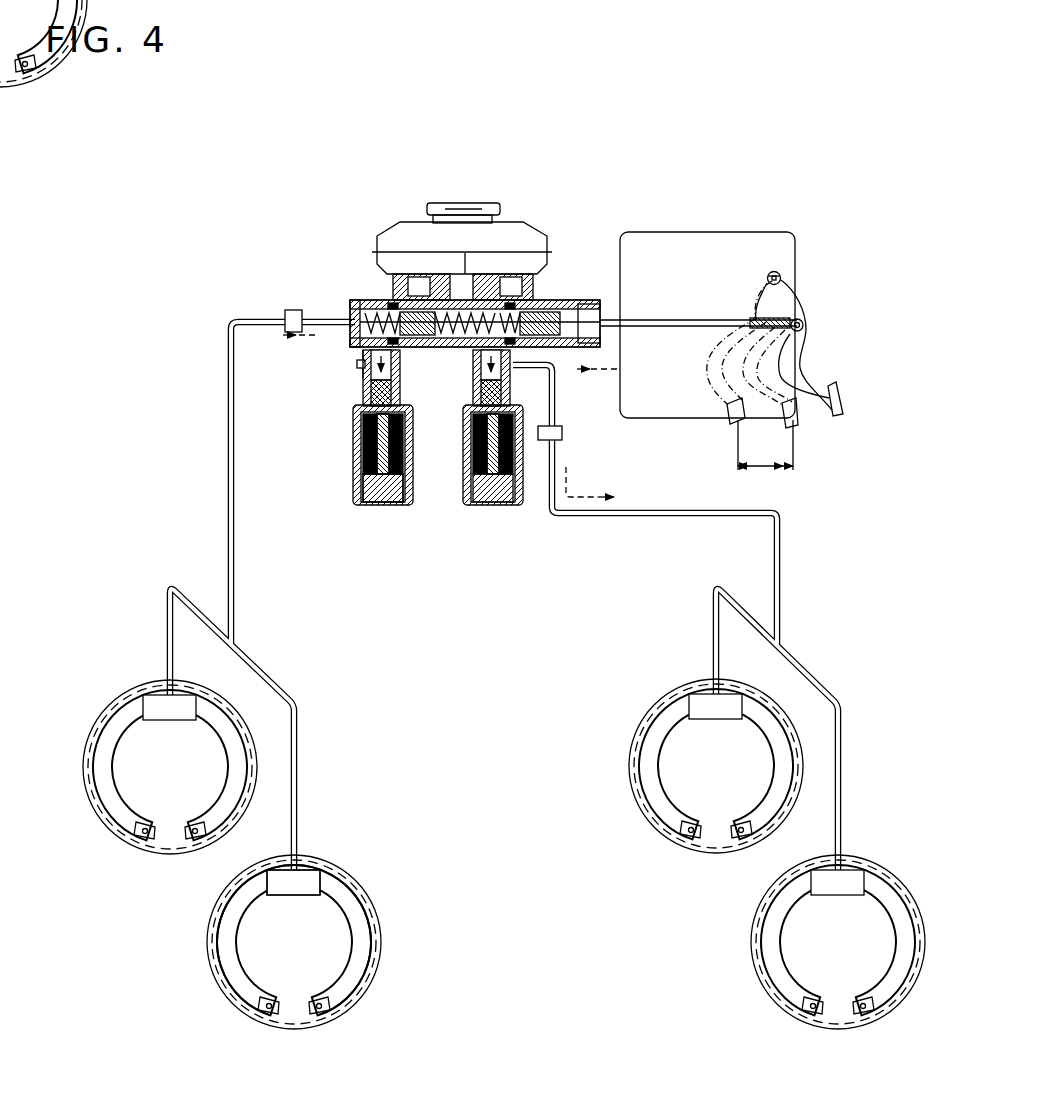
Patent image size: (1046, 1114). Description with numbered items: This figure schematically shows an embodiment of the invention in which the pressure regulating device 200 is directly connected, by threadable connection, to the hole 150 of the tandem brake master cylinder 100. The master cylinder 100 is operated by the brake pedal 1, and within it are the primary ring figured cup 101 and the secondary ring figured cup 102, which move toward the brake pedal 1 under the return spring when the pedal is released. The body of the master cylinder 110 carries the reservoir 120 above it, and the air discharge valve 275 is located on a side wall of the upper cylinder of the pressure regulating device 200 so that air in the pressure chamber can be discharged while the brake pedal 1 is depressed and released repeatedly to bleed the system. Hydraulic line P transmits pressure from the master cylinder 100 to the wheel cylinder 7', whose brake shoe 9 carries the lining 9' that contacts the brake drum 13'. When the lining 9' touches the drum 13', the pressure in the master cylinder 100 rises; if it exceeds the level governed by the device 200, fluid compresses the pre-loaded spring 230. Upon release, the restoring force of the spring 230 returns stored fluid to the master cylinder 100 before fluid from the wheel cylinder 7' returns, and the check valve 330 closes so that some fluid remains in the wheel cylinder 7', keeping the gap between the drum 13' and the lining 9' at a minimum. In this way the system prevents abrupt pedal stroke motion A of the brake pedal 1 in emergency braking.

The brake pedal 1 is at (805, 304).
The tandem brake master cylinder 100 is at (447, 307).
The primary ring figured cup 101 is at (545, 355).
The secondary ring figured cup 102 is at (437, 323).
The cylinder body 110 is at (554, 300).
The reservoir 120 is at (360, 303).
The hole 150 is at (355, 350).
The pressure regulating device 200 is at (352, 527).
The spring 230 is at (402, 432).
The air discharge valve 275 is at (437, 323).
The check valve 330 is at (288, 314).
The hydraulic line P is at (226, 481).
The pedal stroke A is at (765, 445).
The brake shoe 9 is at (318, 931).
The lining 9' is at (162, 791).
The wheel cylinder 7' is at (235, 915).
The brake drum 13' is at (341, 954).